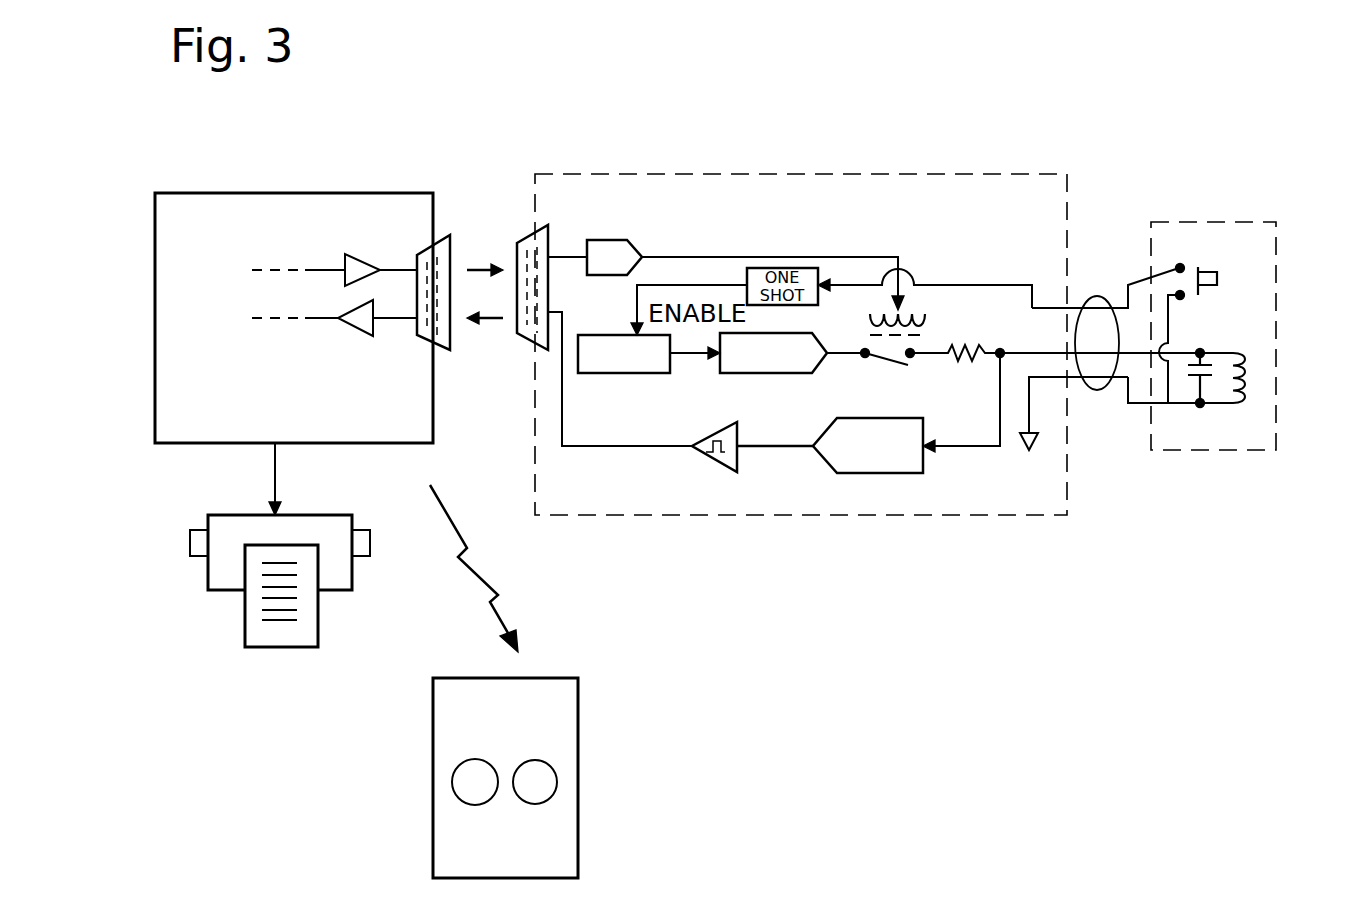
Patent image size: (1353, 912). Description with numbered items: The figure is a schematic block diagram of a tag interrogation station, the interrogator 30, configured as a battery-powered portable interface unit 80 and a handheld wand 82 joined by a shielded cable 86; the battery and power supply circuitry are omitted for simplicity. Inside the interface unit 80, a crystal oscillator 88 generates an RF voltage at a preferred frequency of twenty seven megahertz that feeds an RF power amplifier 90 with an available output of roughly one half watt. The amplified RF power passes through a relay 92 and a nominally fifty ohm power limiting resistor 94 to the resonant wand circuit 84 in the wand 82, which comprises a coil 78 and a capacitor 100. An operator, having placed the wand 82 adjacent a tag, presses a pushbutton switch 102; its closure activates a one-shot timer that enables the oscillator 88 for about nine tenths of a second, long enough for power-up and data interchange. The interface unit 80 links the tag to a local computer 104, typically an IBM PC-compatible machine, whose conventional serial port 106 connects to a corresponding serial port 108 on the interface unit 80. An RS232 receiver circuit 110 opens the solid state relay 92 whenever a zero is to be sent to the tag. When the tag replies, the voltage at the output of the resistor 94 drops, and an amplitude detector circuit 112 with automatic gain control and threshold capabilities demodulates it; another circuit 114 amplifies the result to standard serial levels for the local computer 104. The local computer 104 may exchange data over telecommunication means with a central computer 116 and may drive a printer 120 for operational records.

The interrogator 30 is at (1219, 361).
The coil 78 is at (1245, 386).
The portable interface unit 80 is at (890, 515).
The handheld wand 82 is at (1222, 331).
The resonant wand circuit 84 is at (1211, 433).
The shielded cable 86 is at (1100, 297).
The crystal oscillator 88 is at (645, 373).
The RF power amplifier 90 is at (745, 373).
The relay 92 is at (906, 368).
The power limiting resistor 94 is at (952, 342).
The capacitor 100 is at (1195, 377).
The pushbutton switch 102 is at (1217, 280).
The local computer 104 is at (155, 397).
The serial port 106 is at (450, 237).
The serial port 108 is at (518, 243).
The RS232 receiver circuit 110 is at (612, 240).
The amplitude detector circuit 112 is at (833, 470).
The amplifier circuit 114 is at (715, 465).
The central computer 116 is at (567, 730).
The printer 120 is at (215, 570).